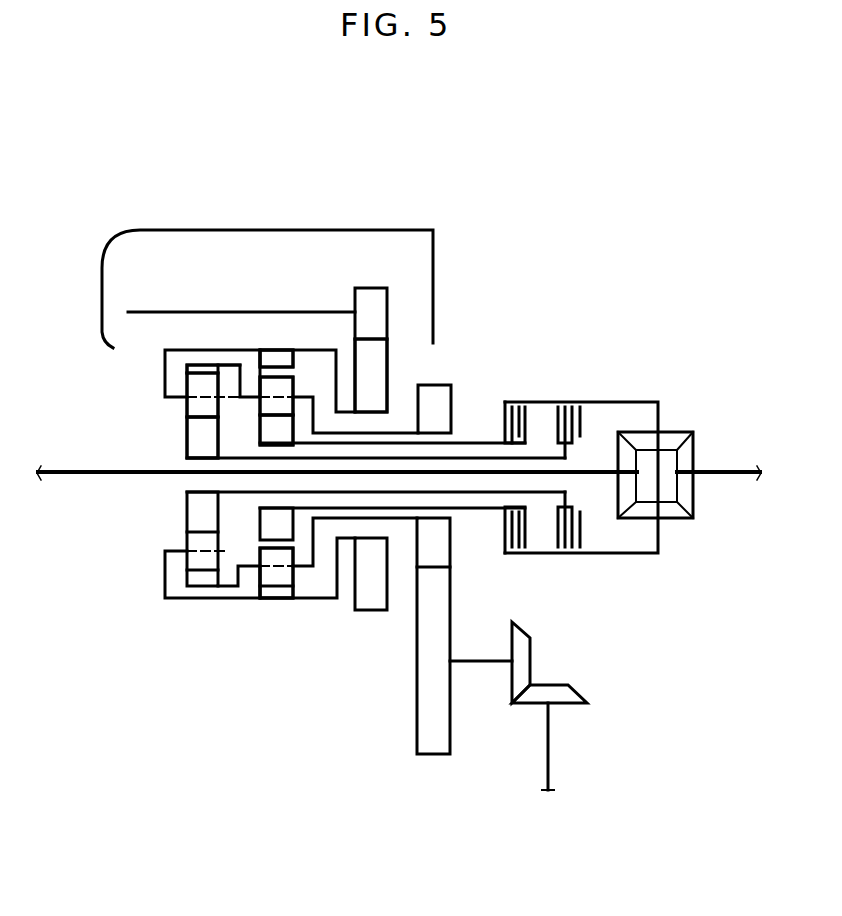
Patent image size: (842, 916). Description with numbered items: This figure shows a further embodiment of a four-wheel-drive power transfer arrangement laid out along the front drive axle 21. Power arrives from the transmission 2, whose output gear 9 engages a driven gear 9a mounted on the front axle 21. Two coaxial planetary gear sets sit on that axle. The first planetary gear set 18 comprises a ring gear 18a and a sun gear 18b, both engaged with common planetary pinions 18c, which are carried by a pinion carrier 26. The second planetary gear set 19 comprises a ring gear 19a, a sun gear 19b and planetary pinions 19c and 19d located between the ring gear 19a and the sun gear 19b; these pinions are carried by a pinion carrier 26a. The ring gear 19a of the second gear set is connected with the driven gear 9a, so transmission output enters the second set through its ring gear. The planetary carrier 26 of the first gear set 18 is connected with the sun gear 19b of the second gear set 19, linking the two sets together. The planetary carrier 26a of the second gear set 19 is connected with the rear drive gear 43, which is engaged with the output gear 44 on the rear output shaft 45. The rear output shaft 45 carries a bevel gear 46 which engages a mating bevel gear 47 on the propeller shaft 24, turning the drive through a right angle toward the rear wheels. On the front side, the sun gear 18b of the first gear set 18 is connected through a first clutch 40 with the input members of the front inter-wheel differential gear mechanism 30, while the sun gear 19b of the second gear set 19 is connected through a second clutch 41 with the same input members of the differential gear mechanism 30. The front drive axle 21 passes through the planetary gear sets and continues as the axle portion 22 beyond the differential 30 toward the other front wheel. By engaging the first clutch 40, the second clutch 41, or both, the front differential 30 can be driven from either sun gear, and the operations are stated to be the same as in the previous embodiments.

The transmission 2 is at (341, 229).
The output gear 9 is at (388, 300).
The driven gear 9a is at (383, 388).
The first planetary gear set 18 is at (205, 590).
The ring gear 18a is at (193, 365).
The sun gear 18b is at (190, 428).
The planetary pinions 18c is at (193, 383).
The second planetary gear set 19 is at (280, 604).
The ring gear 19a is at (280, 358).
The sun gear 19b is at (265, 428).
The planetary pinion 19c is at (290, 383).
The planetary pinion 19d is at (287, 557).
The front drive axle 21 is at (88, 477).
The output shaft 22 is at (738, 476).
The propeller shaft 24 is at (549, 760).
The pinion carrier 26 is at (163, 362).
The pinion carrier 26a is at (232, 363).
The front inter-wheel differential gear mechanism 30 is at (692, 432).
The first clutch 40 is at (568, 401).
The second clutch 41 is at (517, 399).
The rear drive gear 43 is at (448, 399).
The output gear 44 is at (442, 737).
The rear output shaft 45 is at (478, 658).
The bevel gear 46 is at (525, 652).
The bevel gear 47 is at (568, 697).